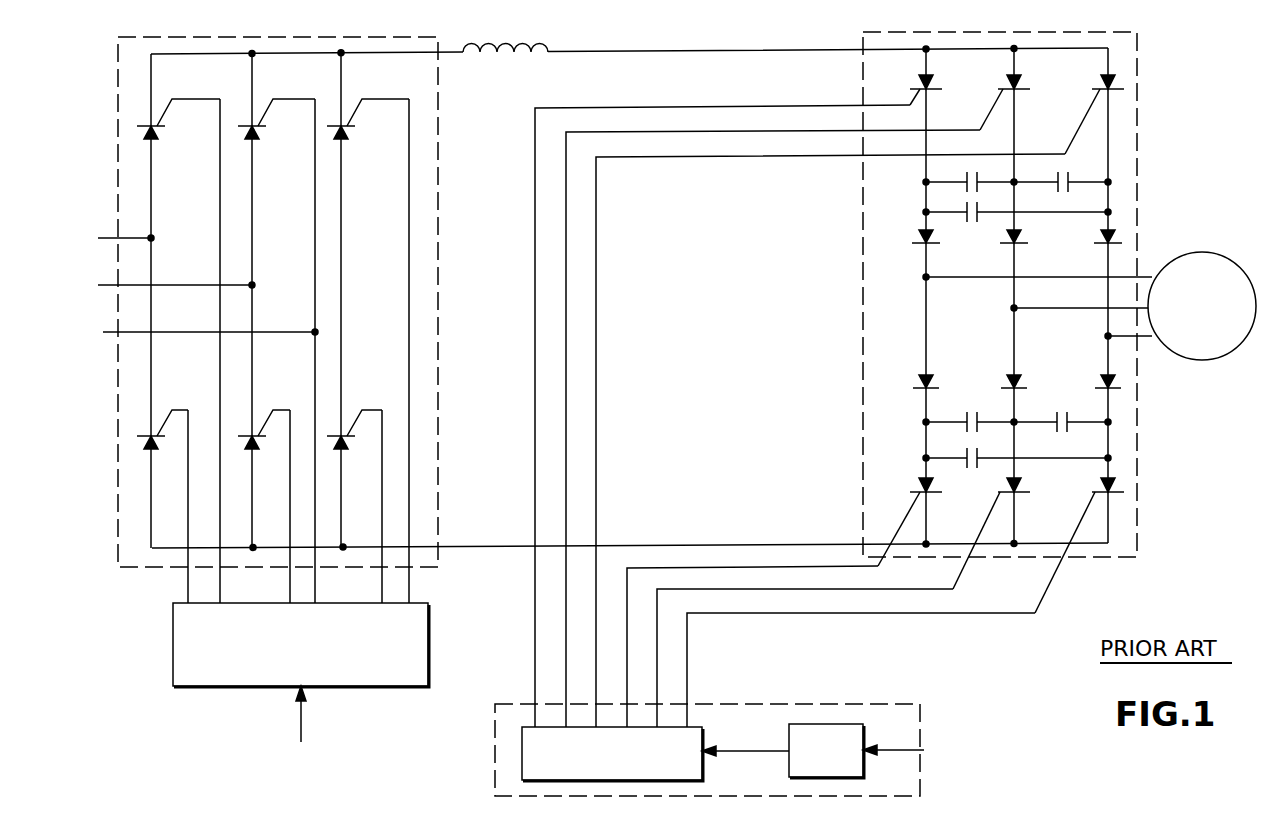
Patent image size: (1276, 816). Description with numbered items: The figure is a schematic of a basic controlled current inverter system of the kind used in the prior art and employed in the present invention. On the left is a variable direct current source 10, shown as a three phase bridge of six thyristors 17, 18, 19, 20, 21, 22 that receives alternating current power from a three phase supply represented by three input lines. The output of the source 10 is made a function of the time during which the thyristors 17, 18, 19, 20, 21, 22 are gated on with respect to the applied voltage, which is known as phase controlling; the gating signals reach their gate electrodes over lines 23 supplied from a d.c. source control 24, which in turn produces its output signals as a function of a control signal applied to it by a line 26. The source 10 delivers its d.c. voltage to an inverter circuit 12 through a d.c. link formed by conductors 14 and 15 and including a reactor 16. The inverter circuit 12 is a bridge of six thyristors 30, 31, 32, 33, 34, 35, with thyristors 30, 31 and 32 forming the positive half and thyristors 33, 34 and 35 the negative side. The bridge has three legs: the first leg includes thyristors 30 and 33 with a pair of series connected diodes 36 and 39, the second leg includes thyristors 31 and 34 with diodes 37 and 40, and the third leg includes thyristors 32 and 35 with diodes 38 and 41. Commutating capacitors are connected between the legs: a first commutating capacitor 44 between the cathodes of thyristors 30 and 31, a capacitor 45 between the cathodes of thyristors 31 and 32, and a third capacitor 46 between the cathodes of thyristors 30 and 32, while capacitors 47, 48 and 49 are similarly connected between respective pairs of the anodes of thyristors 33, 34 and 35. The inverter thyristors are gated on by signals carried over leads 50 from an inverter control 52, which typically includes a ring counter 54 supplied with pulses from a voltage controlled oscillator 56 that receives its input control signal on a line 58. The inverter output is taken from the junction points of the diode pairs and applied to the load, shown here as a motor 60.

The variable direct current source 10 is at (438, 122).
The inverter circuit 12 is at (1137, 93).
The conductor 14 is at (652, 55).
The conductor 15 is at (734, 544).
The reactor 16 is at (538, 54).
The thyristor 17 is at (180, 131).
The thyristor 18 is at (283, 131).
The thyristor 19 is at (375, 132).
The thyristor 20 is at (161, 443).
The thyristor 21 is at (262, 443).
The thyristor 22 is at (352, 443).
The lines 23 is at (188, 586).
The d.c. source control 24 is at (173, 638).
The line 26 is at (301, 716).
The thyristor 30 is at (920, 82).
The thyristor 31 is at (1009, 82).
The thyristor 32 is at (1102, 79).
The thyristor 33 is at (921, 488).
The thyristor 34 is at (1028, 494).
The thyristor 35 is at (1096, 476).
The diode 36 is at (914, 248).
The diode 37 is at (1030, 240).
The diode 38 is at (1096, 247).
The diode 39 is at (916, 378).
The diode 40 is at (1003, 378).
The diode 41 is at (1098, 376).
The first commutating capacitor 44 is at (975, 172).
The commutating capacitor 45 is at (1065, 172).
The commutating capacitor 46 is at (972, 222).
The commutating capacitor 47 is at (986, 414).
The commutating capacitor 48 is at (1076, 414).
The commutating capacitor 49 is at (985, 470).
The leads 50 is at (600, 619).
The inverter control 52 is at (750, 703).
The ring counter 54 is at (703, 733).
The voltage controlled oscillator 56 is at (864, 730).
The line 58 is at (924, 750).
The motor 60 is at (1213, 253).